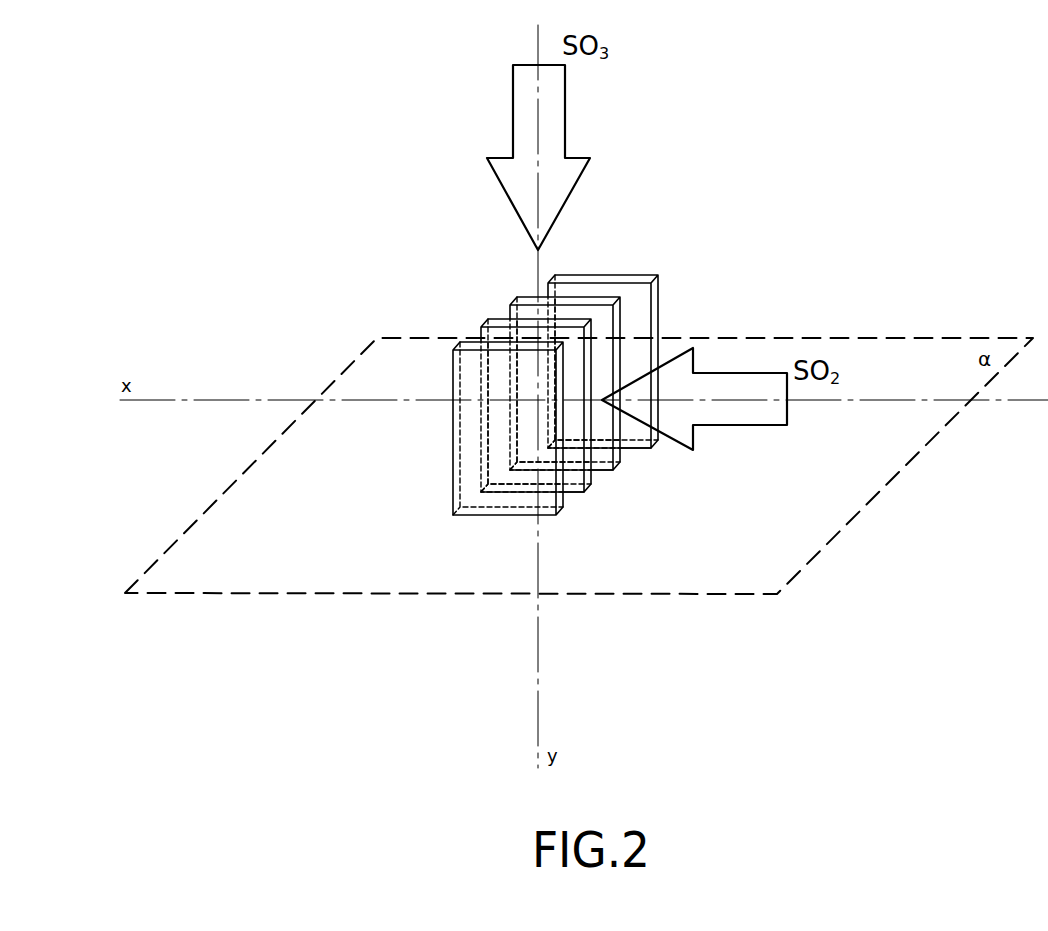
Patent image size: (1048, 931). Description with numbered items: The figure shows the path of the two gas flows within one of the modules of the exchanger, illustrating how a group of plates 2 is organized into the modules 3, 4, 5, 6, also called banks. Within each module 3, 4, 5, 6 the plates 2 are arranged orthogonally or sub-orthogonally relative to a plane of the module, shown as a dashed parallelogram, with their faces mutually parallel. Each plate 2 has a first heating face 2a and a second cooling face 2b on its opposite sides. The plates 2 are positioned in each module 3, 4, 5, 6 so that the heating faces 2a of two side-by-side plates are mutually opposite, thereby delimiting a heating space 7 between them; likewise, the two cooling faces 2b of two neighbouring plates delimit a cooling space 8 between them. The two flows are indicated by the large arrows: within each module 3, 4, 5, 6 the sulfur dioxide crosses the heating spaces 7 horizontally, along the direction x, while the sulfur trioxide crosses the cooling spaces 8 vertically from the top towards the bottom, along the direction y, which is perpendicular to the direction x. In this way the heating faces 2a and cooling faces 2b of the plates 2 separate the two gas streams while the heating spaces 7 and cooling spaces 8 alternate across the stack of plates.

The plate 2 is at (575, 394).
The heating face 2a is at (652, 292).
The cooling face 2b is at (632, 292).
The module 3 is at (545, 262).
The module 4 is at (536, 405).
The module 5 is at (565, 383).
The module 6 is at (603, 361).
The heating space 7 is at (572, 502).
The cooling space 8 is at (600, 480).